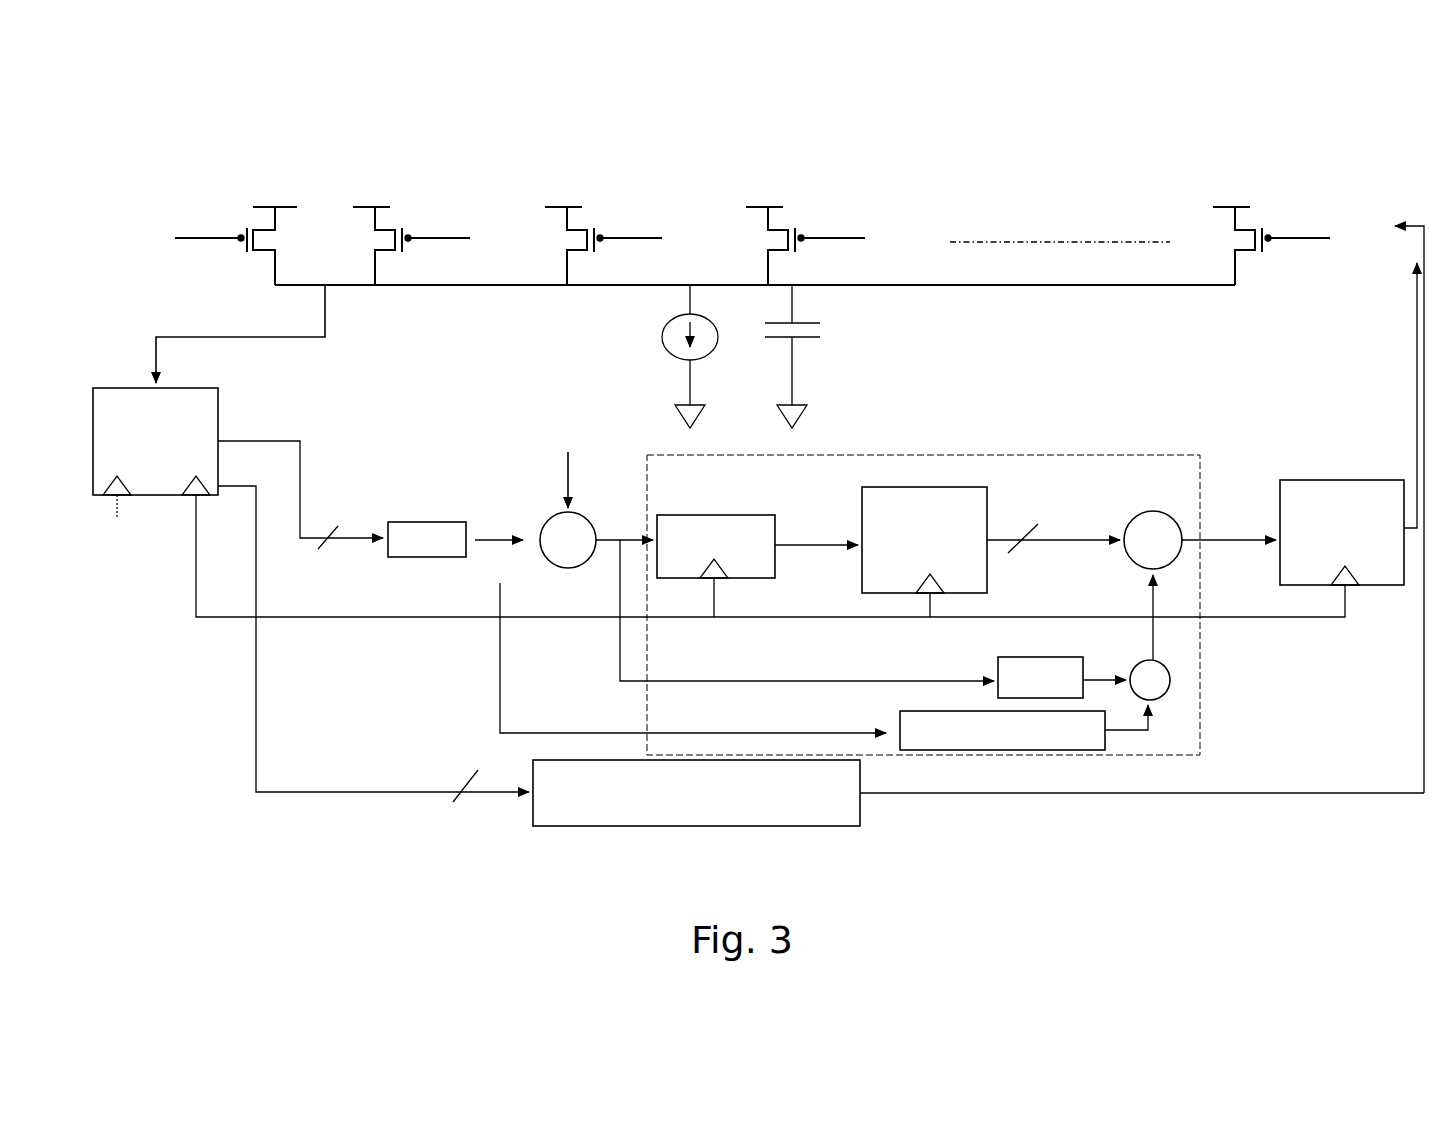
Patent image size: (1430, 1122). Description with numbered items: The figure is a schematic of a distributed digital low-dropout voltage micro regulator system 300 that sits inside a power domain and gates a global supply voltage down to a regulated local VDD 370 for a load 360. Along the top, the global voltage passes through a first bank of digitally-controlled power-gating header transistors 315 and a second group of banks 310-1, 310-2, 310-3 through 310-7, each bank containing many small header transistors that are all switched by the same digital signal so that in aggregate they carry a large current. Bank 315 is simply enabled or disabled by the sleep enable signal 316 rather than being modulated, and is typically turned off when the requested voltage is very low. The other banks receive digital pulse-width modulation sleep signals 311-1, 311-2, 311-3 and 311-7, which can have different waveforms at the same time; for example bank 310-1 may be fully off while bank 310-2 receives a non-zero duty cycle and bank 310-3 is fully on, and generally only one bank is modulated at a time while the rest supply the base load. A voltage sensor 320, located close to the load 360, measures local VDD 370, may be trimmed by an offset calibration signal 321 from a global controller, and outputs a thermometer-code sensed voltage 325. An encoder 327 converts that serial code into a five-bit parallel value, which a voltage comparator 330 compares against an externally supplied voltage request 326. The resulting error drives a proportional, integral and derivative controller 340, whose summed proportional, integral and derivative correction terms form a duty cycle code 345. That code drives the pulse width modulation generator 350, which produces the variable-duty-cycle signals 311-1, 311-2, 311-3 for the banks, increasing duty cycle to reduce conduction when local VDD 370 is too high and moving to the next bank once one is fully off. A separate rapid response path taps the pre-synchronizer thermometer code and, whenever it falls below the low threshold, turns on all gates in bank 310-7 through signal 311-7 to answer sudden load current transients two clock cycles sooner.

The distributed digital low-dropout voltage micro regulator system 300 is at (700, 75).
The first plurality of digitally-controlled power-gating header transistors 315 is at (253, 254).
The enable signal Sleep_pwm[0] 316 is at (175, 240).
The power-gating header transistor bank 310-1 is at (397, 253).
The power-gating header transistor bank 310-2 is at (589, 253).
The power-gating header transistor bank 310-3 is at (790, 253).
The power-gating header transistor bank 310-7 is at (1257, 253).
The PWM signal Sleep_pwm[1] 311-1 is at (443, 213).
The PWM signal Sleep_pwm[2] 311-2 is at (636, 213).
The PWM signal Sleep_pwm[3] 311-3 is at (840, 213).
The signal Sleep_pwm[7] 311-7 is at (1305, 213).
The local VDD 370 is at (243, 340).
The load 360 is at (660, 356).
The voltage sensor 320 is at (138, 417).
The voltage offset calibration signal 321 is at (115, 553).
The sensed voltage Vsense 325 is at (310, 463).
The encoder 327 is at (432, 514).
The voltage request 326 is at (582, 488).
The voltage comparator 330 is at (598, 548).
The proportional, integral and derivative (PID) controller 340 is at (990, 455).
The duty cycle code 345 is at (1222, 480).
The pulse width modulation generator (PWM) 350 is at (1360, 514).